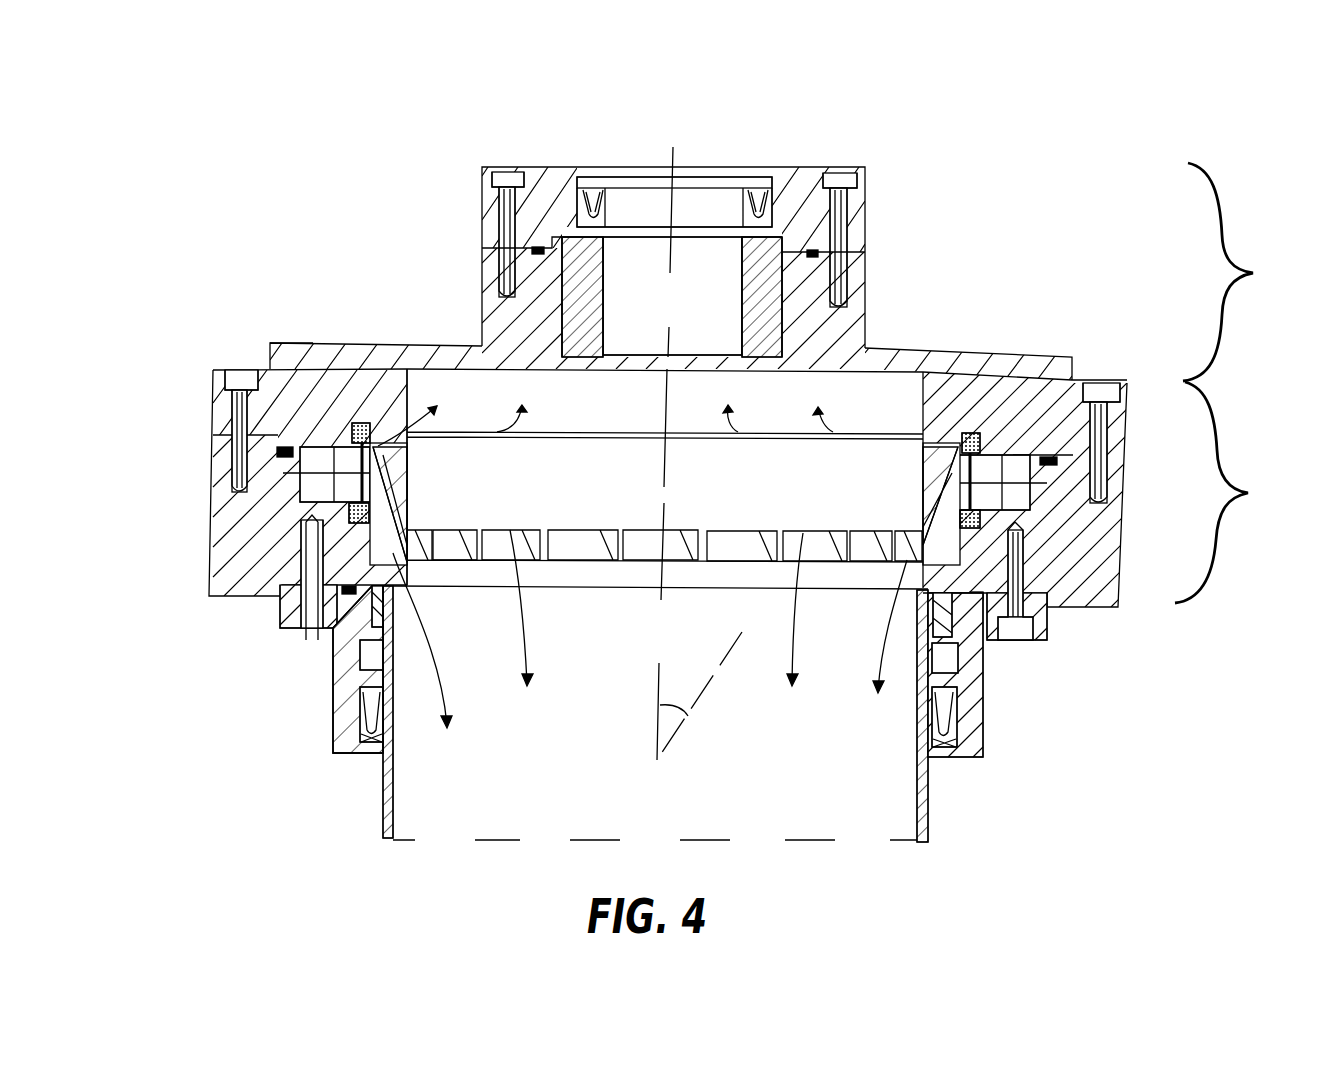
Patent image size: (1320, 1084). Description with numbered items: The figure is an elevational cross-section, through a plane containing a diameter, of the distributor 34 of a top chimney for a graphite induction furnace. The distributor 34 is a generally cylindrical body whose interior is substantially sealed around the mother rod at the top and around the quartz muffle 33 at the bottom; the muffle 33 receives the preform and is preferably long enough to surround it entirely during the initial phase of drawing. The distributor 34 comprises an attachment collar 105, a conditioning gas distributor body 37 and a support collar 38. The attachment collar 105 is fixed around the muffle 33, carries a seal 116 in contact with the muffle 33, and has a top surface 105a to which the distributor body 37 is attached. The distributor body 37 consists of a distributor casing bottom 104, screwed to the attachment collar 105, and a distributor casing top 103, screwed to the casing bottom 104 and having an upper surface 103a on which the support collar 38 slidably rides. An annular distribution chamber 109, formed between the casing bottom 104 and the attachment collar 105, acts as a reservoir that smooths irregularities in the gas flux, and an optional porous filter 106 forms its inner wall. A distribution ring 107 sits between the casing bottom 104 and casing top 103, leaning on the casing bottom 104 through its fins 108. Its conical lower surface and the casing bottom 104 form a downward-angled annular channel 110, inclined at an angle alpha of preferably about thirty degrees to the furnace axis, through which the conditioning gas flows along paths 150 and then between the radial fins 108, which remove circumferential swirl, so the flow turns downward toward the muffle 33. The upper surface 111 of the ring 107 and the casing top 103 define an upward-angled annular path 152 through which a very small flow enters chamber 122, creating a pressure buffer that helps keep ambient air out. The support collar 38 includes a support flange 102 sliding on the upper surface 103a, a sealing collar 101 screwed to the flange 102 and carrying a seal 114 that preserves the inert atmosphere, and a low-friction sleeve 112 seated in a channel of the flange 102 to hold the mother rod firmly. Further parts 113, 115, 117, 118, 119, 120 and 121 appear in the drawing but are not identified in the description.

The quartz muffle 33 is at (383, 807).
The distributor 34 is at (1002, 236).
The conditioning gas distributor body 37 is at (1236, 492).
The support collar 38 is at (1244, 272).
The sealing collar 101 is at (493, 191).
The support flange 102 is at (490, 287).
The distributor casing top 103 is at (220, 401).
The upper surface 103a is at (310, 343).
The distributor casing bottom 104 is at (220, 446).
The attachment collar 105 is at (287, 612).
The top surface 105a is at (292, 582).
The porous filter 106 is at (952, 492).
The distribution ring 107 is at (660, 518).
The fins 108 is at (780, 552).
The annular distribution chamber 109 is at (1018, 497).
The annular channel 110 is at (923, 517).
The upper surface 111 is at (402, 447).
The sleeve 112 is at (810, 254).
The seal 113 is at (400, 609).
The seal 114 is at (765, 212).
The bearing seal 115 is at (758, 193).
The seal 116 is at (363, 708).
The tube wall 117 is at (377, 707).
The o-ring 118 is at (537, 246).
The bolt 119 is at (257, 372).
The bolt 120 is at (1020, 572).
The housing 121 is at (375, 650).
The chamber 122 is at (870, 398).
The paths 150 is at (650, 632).
The upward-angled annular path 152 is at (605, 415).